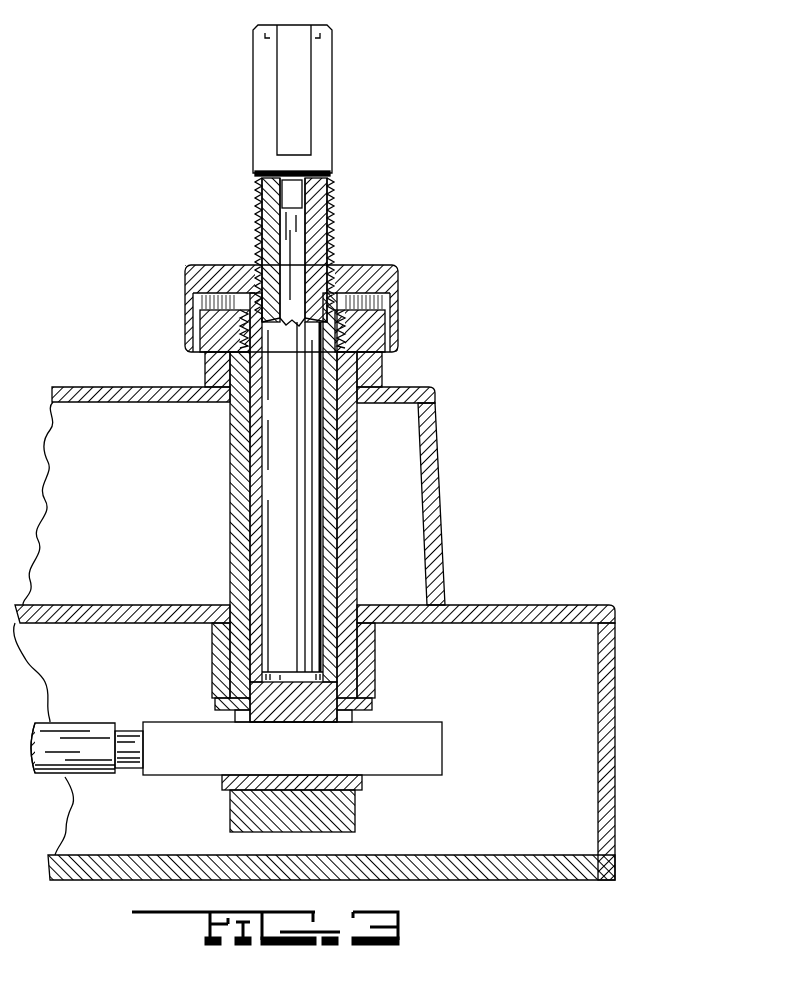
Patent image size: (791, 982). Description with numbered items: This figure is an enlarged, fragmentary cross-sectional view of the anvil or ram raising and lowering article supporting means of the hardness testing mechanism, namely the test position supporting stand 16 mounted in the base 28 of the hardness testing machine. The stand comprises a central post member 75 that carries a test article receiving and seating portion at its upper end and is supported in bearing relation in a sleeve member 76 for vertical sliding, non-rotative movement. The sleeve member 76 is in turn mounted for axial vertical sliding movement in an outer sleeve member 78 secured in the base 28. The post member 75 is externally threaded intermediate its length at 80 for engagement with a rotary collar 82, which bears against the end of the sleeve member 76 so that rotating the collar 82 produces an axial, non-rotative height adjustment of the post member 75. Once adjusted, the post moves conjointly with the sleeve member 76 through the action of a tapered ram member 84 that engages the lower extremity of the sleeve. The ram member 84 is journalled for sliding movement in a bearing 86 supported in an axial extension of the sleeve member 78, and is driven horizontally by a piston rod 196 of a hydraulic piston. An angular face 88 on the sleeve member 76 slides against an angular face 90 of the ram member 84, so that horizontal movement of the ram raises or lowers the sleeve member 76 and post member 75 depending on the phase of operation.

The test position supporting stand 16 is at (398, 425).
The base 28 is at (530, 610).
The central post member 75 is at (313, 128).
The sleeve member 76 is at (327, 507).
The sleeve member 78 is at (347, 568).
The external thread 80 is at (320, 230).
The rotary collar 82 is at (383, 279).
The ram member 84 is at (164, 721).
The bearing 86 is at (356, 781).
The angular face 88 is at (295, 719).
The angular face 90 is at (268, 723).
The piston rod 196 is at (127, 752).